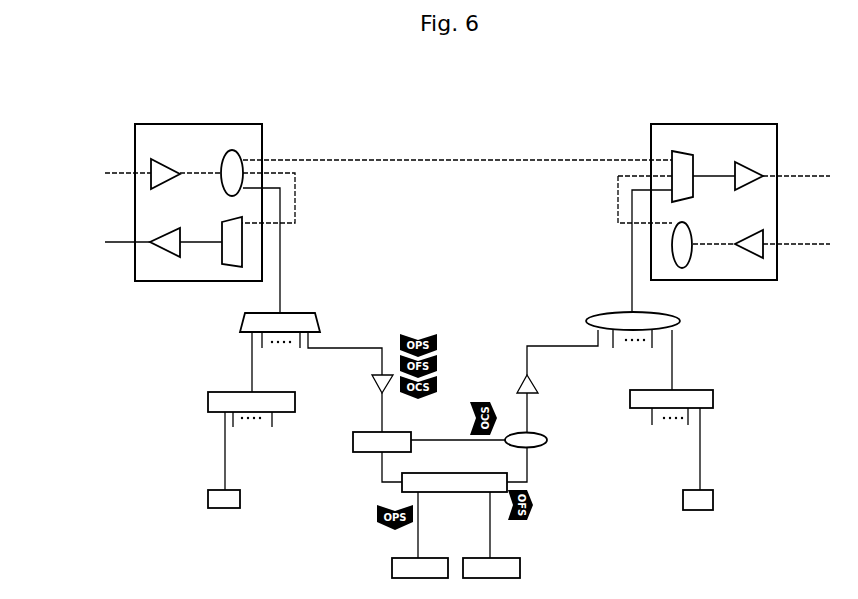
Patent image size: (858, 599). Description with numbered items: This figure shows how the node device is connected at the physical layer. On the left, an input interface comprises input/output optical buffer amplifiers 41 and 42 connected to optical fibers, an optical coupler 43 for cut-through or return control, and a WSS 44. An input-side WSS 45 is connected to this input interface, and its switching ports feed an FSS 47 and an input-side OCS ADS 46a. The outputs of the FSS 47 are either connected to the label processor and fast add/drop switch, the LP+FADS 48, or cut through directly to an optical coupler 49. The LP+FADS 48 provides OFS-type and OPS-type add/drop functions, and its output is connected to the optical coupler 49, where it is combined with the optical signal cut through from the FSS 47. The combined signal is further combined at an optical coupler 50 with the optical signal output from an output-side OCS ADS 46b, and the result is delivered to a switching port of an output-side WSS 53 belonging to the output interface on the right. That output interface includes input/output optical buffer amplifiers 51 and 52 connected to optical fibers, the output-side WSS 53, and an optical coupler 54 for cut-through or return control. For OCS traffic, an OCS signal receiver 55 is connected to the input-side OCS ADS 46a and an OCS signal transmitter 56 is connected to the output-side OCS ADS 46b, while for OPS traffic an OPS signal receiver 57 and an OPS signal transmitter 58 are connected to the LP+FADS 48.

The input/output optical buffer amplifier 41 is at (165, 159).
The input/output optical buffer amplifier 42 is at (165, 228).
The optical coupler 43 is at (224, 153).
The WSS 44 is at (223, 221).
The input-side WSS 45 is at (292, 313).
The input-side OCS ADS 46a is at (268, 392).
The output-side OCS ADS 46b is at (680, 390).
The FSS 47 is at (393, 433).
The label processor and fast add/drop switch (LP+FADS) 48 is at (462, 474).
The optical coupler 49 is at (540, 434).
The optical coupler 50 is at (648, 313).
The input/output optical buffer amplifier 51 is at (748, 162).
The input/output optical buffer amplifier 52 is at (748, 230).
The output-side WSS 53 is at (686, 151).
The optical coupler 54 is at (691, 224).
The OCS signal receiver 55 is at (237, 490).
The OCS signal transmitter 56 is at (710, 490).
The OPS signal receiver 57 is at (425, 558).
The OPS signal transmitter 58 is at (498, 558).